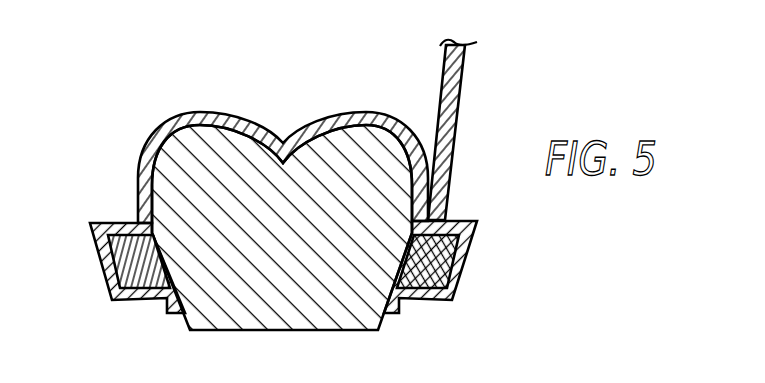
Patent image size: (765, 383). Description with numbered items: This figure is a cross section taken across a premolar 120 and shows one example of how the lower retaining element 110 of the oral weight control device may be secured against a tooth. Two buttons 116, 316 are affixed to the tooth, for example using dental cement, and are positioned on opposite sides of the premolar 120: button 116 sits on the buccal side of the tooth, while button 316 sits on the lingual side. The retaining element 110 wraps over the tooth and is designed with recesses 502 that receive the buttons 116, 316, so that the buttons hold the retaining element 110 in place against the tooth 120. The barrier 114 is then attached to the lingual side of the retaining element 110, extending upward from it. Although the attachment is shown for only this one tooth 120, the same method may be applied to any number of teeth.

The lower retaining element 110 is at (192, 112).
The barrier 114 is at (463, 72).
The button 116 is at (445, 262).
The premolar 120 is at (293, 285).
The button 316 is at (120, 265).
The recesses 502 is at (138, 290).